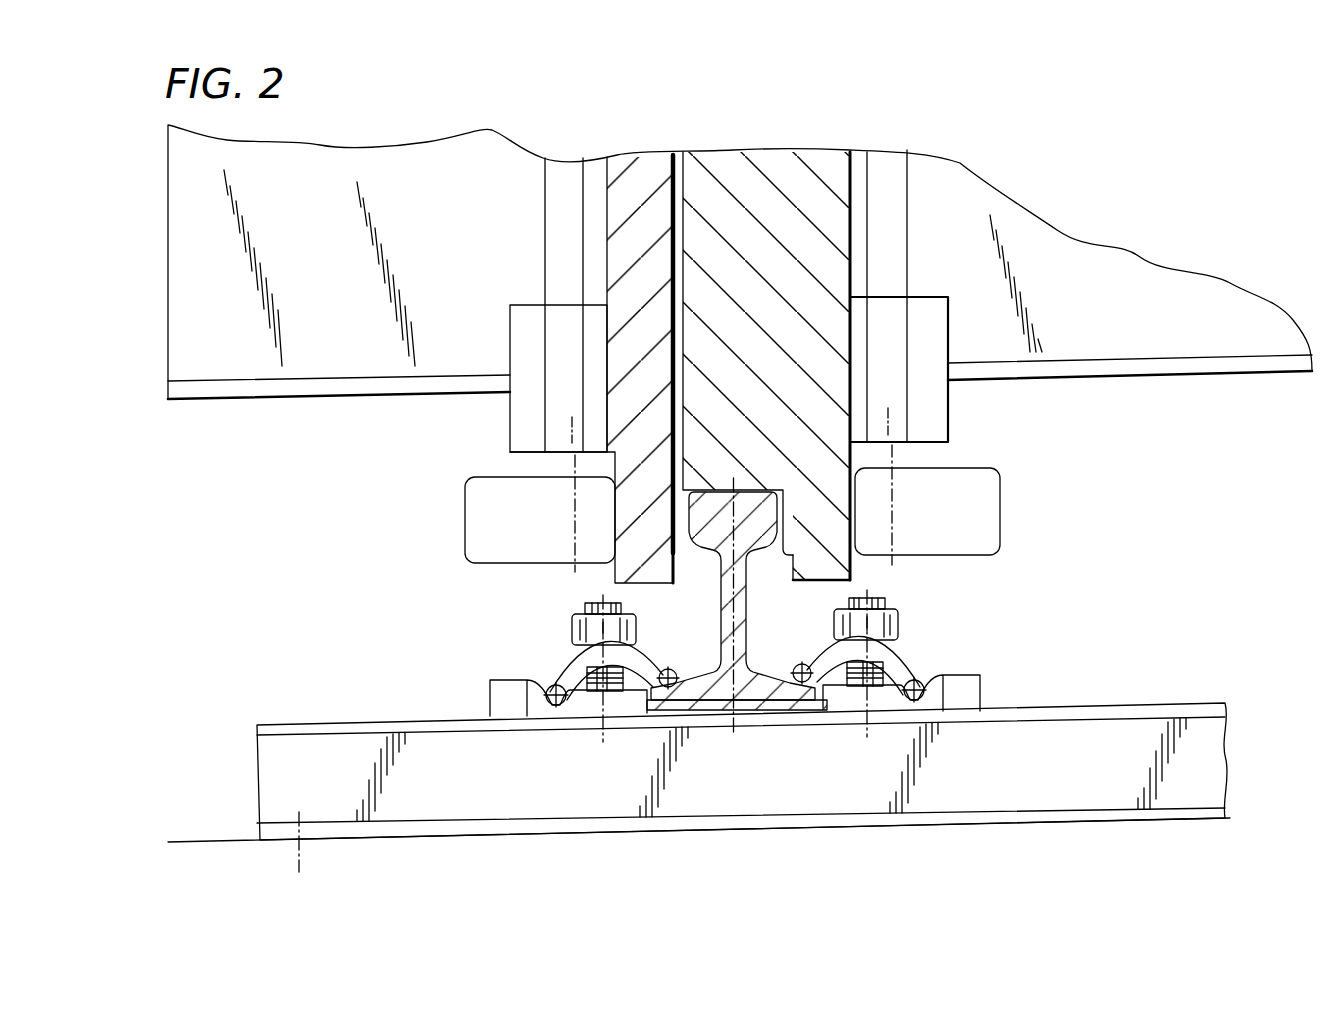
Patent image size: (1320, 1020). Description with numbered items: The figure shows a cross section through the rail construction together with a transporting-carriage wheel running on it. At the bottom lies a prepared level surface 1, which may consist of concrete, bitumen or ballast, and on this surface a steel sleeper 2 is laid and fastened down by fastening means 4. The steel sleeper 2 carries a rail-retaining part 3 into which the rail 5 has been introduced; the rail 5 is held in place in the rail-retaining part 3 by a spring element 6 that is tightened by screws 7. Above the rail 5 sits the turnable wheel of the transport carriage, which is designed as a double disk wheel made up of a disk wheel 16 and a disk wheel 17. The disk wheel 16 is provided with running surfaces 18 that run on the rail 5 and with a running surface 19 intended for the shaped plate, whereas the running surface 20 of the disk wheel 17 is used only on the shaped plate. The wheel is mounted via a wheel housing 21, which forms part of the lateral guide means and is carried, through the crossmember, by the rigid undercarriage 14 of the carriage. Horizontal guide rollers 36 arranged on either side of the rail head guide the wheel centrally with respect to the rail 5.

The prepared level surface 1 is at (236, 840).
The steel sleeper 2 is at (307, 727).
The rail-retaining part 3 is at (963, 685).
The fastening means 4 is at (298, 822).
The rail 5 is at (732, 677).
The spring element 6 is at (898, 663).
The screw 7 is at (893, 622).
The rigid undercarriage 14 is at (272, 383).
The disk wheel 16 is at (818, 312).
The disk wheel 17 is at (640, 288).
The running surface 18 is at (725, 491).
The running surface 19 is at (827, 582).
The running surface 20 is at (650, 583).
The wheel housing 21 is at (887, 208).
The horizontal guide roller 36 is at (487, 516).